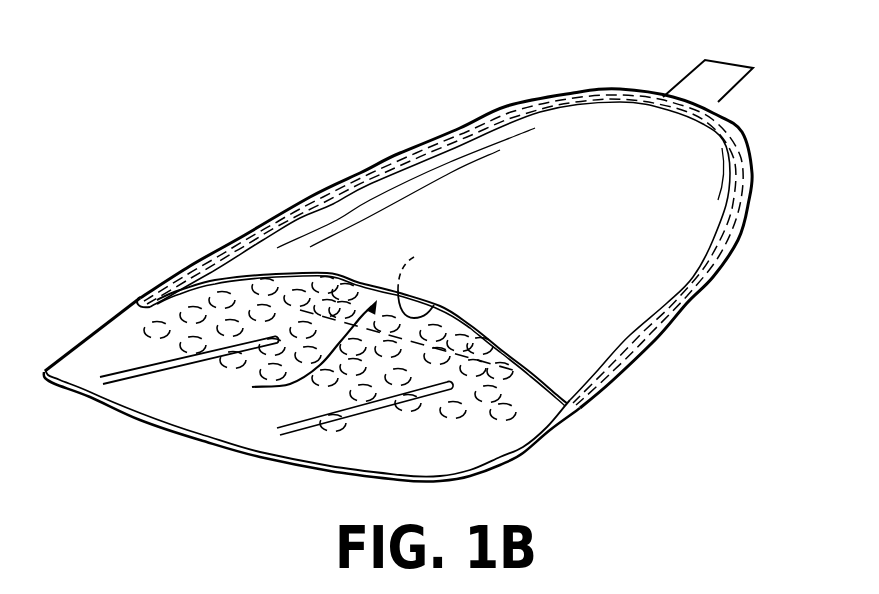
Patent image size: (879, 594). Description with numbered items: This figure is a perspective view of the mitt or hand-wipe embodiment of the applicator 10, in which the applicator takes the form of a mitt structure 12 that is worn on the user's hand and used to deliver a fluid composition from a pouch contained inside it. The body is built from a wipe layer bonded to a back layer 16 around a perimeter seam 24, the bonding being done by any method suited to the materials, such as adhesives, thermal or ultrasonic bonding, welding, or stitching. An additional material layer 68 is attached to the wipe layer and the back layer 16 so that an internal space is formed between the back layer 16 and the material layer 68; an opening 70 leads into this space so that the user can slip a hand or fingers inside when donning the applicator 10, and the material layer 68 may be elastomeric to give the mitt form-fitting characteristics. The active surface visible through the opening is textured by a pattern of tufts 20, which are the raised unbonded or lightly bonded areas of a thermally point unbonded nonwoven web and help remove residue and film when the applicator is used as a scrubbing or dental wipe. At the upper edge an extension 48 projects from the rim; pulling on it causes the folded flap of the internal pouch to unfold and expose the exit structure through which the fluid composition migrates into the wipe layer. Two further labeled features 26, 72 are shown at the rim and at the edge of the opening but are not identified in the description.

The applicator 10 is at (158, 215).
The mitt structure 12 is at (754, 181).
The back layer 16 is at (240, 424).
The tufts 20 is at (330, 438).
The perimeter seam 24 is at (607, 383).
The outer rim wall 26 is at (353, 176).
The extension 48 is at (703, 82).
The additional material layer 68 is at (607, 318).
The opening 70 is at (372, 306).
The opening edge 72 is at (443, 307).